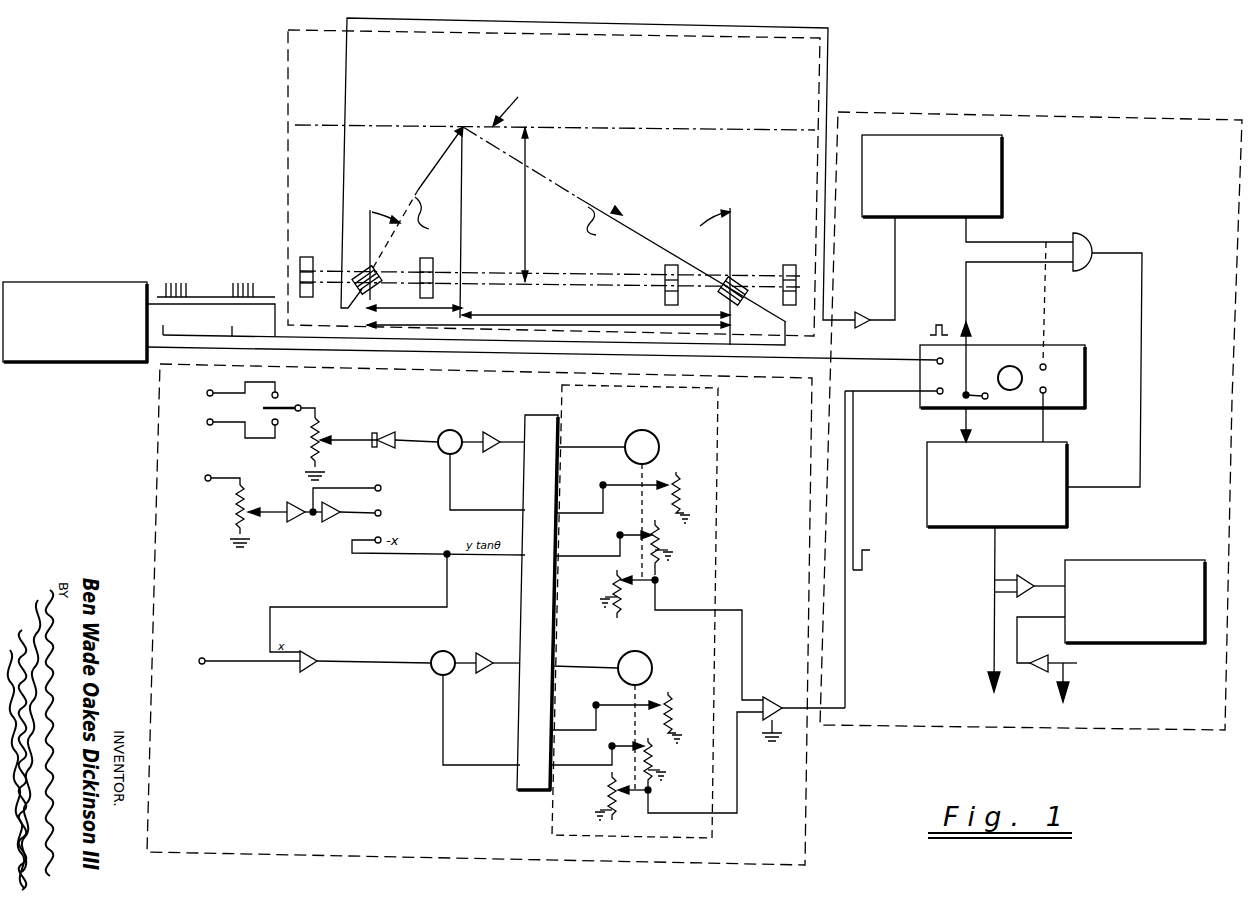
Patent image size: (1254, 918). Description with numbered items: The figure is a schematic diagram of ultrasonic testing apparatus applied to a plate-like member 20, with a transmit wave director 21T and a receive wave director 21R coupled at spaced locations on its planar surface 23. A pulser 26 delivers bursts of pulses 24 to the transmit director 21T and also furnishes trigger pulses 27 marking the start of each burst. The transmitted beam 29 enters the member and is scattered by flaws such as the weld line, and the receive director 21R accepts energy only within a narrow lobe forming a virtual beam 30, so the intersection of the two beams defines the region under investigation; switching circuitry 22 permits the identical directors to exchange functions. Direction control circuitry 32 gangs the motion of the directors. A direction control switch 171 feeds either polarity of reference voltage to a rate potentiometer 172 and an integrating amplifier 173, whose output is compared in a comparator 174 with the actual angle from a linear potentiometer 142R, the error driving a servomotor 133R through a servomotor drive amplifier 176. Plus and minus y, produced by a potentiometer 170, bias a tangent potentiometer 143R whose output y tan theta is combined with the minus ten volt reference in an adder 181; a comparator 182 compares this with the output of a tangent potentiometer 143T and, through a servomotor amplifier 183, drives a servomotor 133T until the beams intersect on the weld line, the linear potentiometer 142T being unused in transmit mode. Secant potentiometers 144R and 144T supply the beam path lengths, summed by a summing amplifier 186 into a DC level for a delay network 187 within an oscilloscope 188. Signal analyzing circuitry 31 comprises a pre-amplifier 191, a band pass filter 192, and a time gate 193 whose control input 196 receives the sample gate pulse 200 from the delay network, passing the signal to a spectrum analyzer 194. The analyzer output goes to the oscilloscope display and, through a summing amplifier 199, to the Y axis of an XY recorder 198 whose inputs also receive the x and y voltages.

The plate-like member 20 is at (284, 167).
The receive wave director 21R is at (353, 268).
The transmit wave director 21T is at (754, 268).
The switching circuitry 22 is at (530, 792).
The planar surface 23 is at (632, 171).
The bursts of pulses 24 is at (180, 284).
The pulser 26 is at (106, 284).
The trigger pulses 27 is at (166, 333).
The beam 29 is at (419, 190).
The virtual beam 30 is at (626, 210).
The signal analyzing circuitry 31 is at (1034, 111).
The direction control circuitry 32 is at (812, 797).
The receive director servomotor 133R is at (656, 434).
The transmit director servomotor 133T is at (620, 672).
The linear potentiometer 142R is at (680, 486).
The tangent potentiometer 143R is at (662, 537).
The secant theta potentiometer 144R is at (612, 604).
The linear potentiometer 142T is at (675, 720).
The tangent potentiometer 143T is at (656, 770).
The secant phi potentiometer 144T is at (594, 804).
The potentiometer 170 is at (252, 496).
The direction control switch 171 is at (297, 392).
The rate potentiometer 172 is at (320, 424).
The integrating amplifier 173 is at (384, 448).
The comparator 174 is at (452, 430).
The servomotor drive amplifier 176 is at (492, 432).
The adder 181 is at (310, 672).
The comparator 182 is at (444, 651).
The servomotor amplifier 183 is at (486, 652).
The summing amplifier 186 is at (770, 696).
The delay network 187 is at (927, 410).
The oscilloscope 188 is at (1085, 369).
The pre-amplifier 191 is at (858, 311).
The band pass filter 192 is at (992, 175).
The time gate 193 is at (1096, 241).
The spectrum analyzer 194 is at (1068, 470).
The control input 196 is at (1020, 263).
The XY recorder 198 is at (1150, 570).
The summing amplifier 199 is at (1024, 576).
The sample gate pulse 200 is at (936, 324).